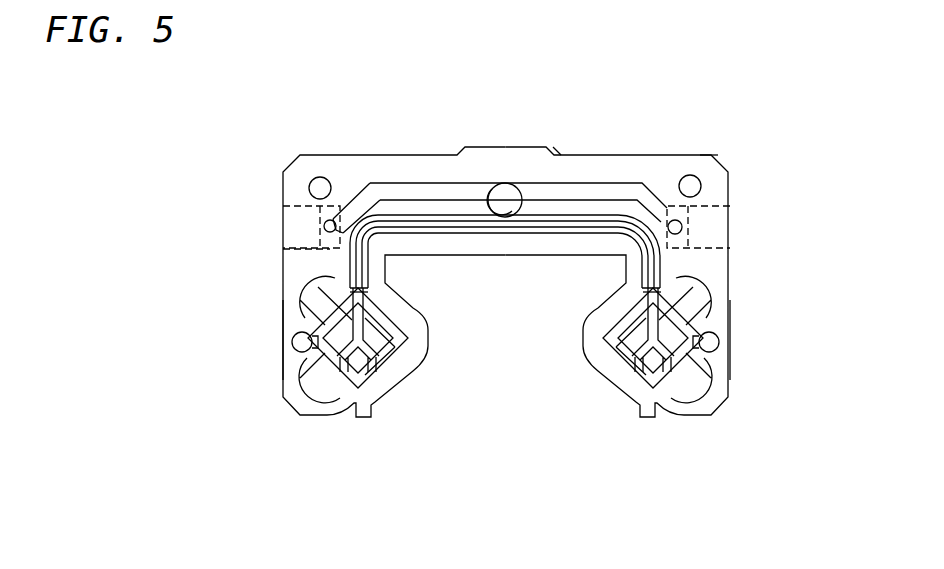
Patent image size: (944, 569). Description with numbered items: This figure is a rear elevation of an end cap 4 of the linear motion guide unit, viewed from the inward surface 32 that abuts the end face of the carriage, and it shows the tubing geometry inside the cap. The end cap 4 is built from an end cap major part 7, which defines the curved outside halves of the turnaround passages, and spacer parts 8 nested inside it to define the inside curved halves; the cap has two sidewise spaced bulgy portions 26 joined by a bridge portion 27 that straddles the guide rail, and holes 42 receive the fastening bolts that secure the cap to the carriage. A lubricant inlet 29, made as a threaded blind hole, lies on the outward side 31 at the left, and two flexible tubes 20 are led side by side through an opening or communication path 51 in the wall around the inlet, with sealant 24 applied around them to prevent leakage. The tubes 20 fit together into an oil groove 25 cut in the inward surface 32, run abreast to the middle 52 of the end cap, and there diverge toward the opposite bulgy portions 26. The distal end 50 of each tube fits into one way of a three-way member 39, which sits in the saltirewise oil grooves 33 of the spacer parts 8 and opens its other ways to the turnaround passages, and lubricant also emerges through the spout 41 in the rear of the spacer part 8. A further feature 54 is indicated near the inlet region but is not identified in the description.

The end cap 4 is at (672, 150).
The end cap major part 7 is at (290, 412).
The spacer part 8 is at (335, 345).
The tube 20 is at (357, 205).
The sealant 24 is at (330, 222).
The oil groove 25 is at (550, 193).
The bulgy portion 26 is at (292, 323).
The bridge portion 27 is at (438, 155).
The lubricant inlet 29 is at (285, 249).
The outward side 31 is at (282, 224).
The inward surface 32 is at (612, 172).
The oil grooves 33 is at (292, 344).
The three-way member 39 is at (362, 347).
The spout 41 is at (330, 400).
The holes 42 is at (318, 177).
The distal end 50 is at (350, 291).
The communication path 51 is at (683, 227).
The middle 52 is at (509, 184).
The projection 54 is at (323, 223).